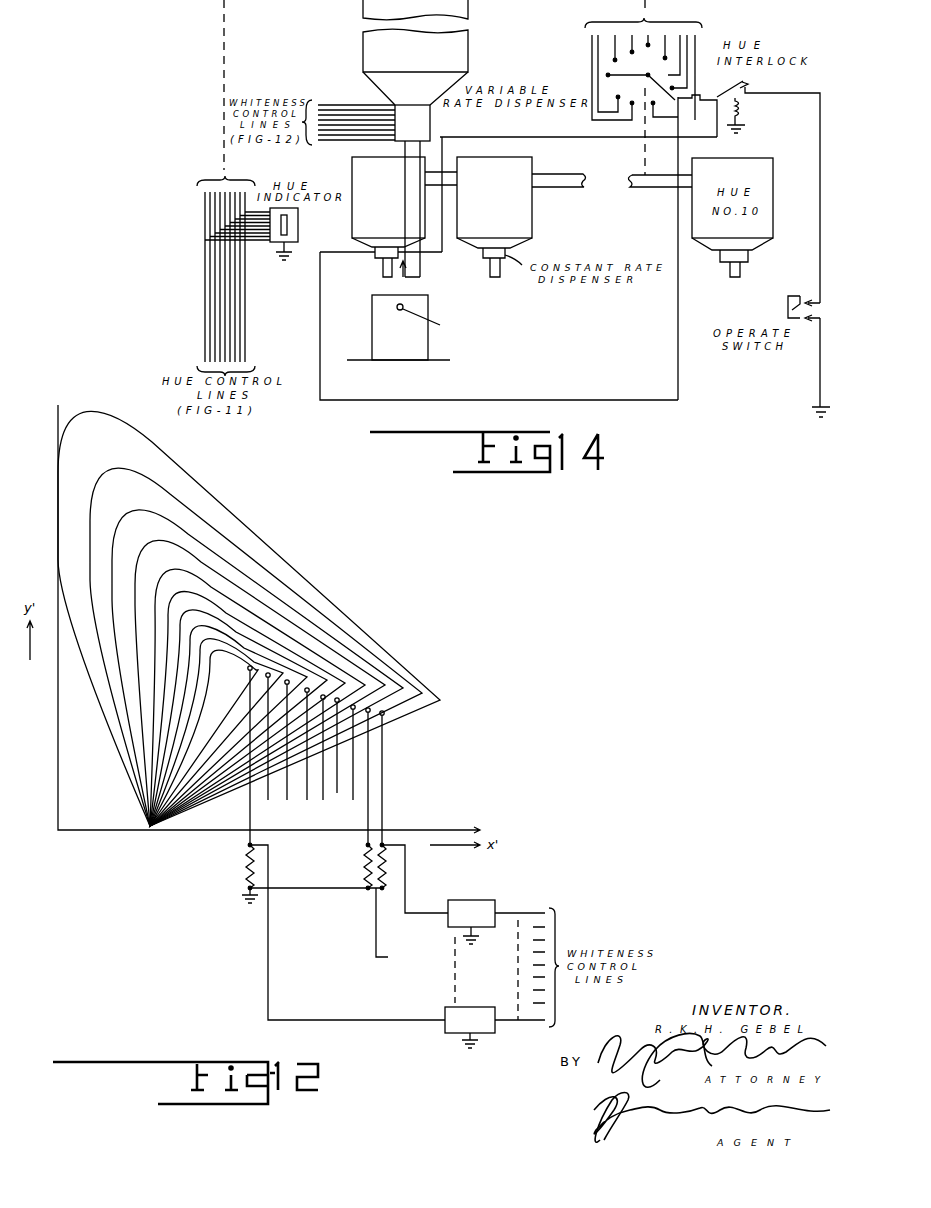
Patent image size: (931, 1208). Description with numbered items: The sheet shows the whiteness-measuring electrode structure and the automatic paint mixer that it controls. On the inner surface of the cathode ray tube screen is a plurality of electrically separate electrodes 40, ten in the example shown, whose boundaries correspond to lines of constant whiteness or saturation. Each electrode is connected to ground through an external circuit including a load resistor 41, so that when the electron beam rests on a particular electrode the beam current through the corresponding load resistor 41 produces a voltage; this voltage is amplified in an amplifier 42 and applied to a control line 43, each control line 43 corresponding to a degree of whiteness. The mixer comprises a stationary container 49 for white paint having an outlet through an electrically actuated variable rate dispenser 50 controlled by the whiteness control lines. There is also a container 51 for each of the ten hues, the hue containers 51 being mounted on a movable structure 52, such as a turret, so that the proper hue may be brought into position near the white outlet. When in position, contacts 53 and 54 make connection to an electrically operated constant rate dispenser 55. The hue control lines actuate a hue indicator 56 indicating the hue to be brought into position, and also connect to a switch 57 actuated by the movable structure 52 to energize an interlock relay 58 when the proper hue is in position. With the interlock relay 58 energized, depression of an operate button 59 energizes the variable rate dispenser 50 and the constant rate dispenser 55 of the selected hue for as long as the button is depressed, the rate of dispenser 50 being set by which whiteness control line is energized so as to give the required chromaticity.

In FIG. 12, the electrodes 40 is at (255, 552).
In FIG. 12, the load resistor 41 is at (247, 866).
In FIG. 12, the amplifier 42 is at (472, 900).
In FIG. 12, the control line 43 is at (520, 912).
In FIG. 14, the stationary container 49 is at (468, 48).
In FIG. 14, the variable rate dispenser 50 is at (430, 124).
In FIG. 14, the container 51 is at (352, 165).
In FIG. 14, the movable structure 52 is at (640, 175).
In FIG. 14, the contact 53 is at (373, 251).
In FIG. 14, the contact 54 is at (499, 326).
In FIG. 14, the constant rate dispenser 55 is at (483, 255).
In FIG. 14, the hue indicator 56 is at (298, 222).
In FIG. 14, the switch 57 is at (573, 53).
In FIG. 14, the interlock relay 58 is at (772, 117).
In FIG. 14, the operate button 59 is at (788, 298).